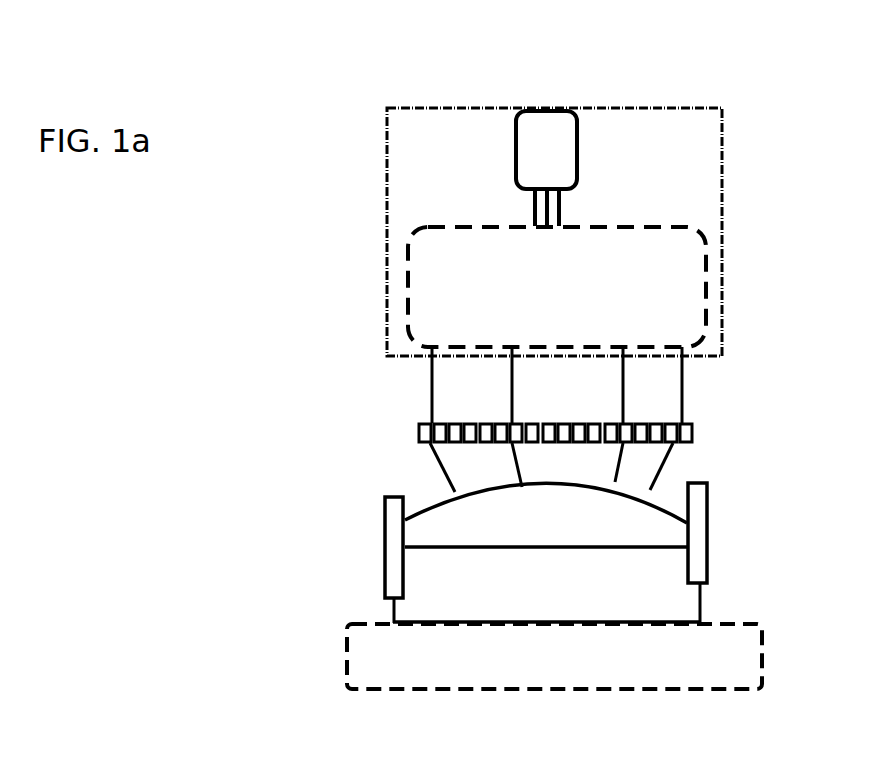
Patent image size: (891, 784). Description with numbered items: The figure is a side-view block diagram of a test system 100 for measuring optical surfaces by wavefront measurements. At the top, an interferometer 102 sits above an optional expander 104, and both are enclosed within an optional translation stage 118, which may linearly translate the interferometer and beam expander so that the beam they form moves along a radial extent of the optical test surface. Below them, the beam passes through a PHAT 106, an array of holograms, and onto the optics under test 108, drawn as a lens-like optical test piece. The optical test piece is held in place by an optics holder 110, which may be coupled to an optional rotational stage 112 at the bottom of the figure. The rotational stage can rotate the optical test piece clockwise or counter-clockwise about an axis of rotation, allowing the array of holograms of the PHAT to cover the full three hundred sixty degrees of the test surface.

The test system 100 is at (599, 50).
The interferometer 102 is at (580, 142).
The expander 104 is at (705, 292).
The PHAT 106 is at (414, 416).
The optics under test 108 is at (447, 496).
The optics holder 110 is at (713, 518).
The rotational stage 112 is at (768, 647).
The translation stage 118 is at (722, 213).